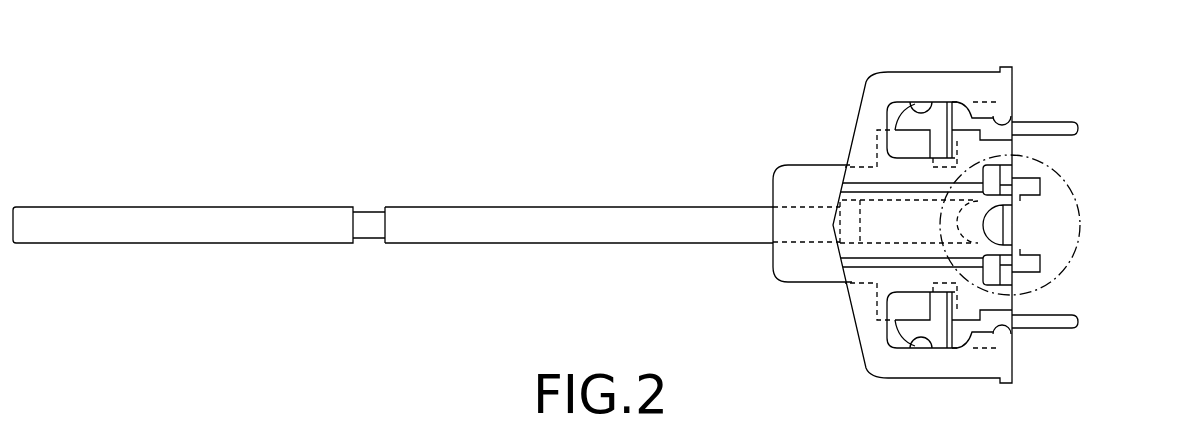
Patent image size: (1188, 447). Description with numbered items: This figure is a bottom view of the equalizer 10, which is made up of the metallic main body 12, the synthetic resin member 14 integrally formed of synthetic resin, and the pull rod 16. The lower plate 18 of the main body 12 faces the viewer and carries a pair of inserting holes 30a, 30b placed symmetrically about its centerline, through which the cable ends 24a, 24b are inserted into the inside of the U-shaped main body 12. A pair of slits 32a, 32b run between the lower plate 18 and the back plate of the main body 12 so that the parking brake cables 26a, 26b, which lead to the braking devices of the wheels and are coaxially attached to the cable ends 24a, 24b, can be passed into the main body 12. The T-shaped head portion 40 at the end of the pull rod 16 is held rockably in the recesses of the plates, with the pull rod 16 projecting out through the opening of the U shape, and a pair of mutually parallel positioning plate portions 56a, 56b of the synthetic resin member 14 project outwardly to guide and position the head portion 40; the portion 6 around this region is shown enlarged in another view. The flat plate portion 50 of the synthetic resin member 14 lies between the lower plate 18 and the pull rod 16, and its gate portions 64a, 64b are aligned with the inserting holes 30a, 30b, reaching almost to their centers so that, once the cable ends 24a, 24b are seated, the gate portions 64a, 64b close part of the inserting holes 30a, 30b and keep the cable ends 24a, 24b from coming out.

The equalizer 10 is at (1057, 50).
The main body 12 is at (888, 55).
The synthetic resin member 14 is at (780, 293).
The pull rod 16 is at (479, 228).
The lower plate 18 is at (870, 93).
The cable end 24a is at (963, 112).
The cable end 24b is at (963, 338).
The parking brake cable 26a is at (1070, 124).
The parking brake cable 26b is at (1065, 322).
The inserting hole 30a is at (915, 107).
The inserting hole 30b is at (915, 343).
The slit 32a is at (1008, 120).
The slit 32b is at (1008, 330).
The head portion 40 is at (995, 227).
The flat plate portion 50 is at (797, 175).
The positioning plate portion 56a is at (1020, 203).
The positioning plate portion 56b is at (1032, 252).
The gate portion 64a is at (885, 145).
The gate portion 64b is at (898, 305).
The portion 6 is at (1080, 220).